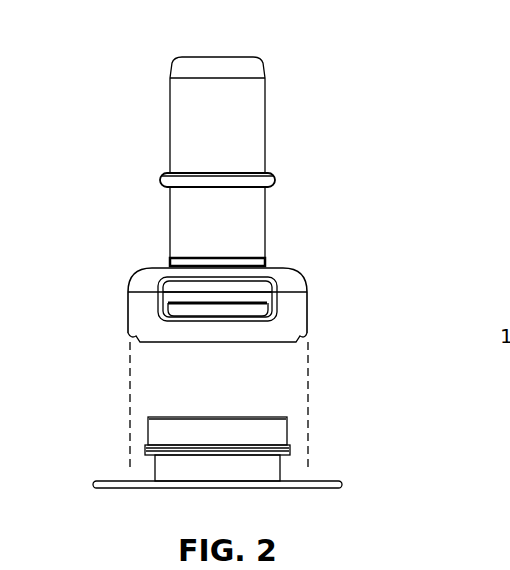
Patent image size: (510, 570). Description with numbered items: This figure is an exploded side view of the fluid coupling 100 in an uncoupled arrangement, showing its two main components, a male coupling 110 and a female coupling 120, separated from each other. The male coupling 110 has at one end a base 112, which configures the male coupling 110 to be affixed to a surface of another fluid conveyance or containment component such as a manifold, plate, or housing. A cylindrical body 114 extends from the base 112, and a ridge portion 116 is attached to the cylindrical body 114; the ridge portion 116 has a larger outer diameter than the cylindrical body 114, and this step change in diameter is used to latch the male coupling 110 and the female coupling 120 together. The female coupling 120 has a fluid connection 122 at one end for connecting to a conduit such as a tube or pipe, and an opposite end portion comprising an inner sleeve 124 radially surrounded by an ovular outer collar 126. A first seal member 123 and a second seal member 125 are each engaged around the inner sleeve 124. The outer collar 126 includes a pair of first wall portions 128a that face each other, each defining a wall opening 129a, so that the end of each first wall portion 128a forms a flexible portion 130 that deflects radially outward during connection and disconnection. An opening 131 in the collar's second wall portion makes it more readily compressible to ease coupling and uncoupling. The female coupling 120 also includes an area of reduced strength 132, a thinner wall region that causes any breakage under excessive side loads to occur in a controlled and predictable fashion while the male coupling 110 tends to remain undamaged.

The fluid coupling 100 is at (427, 158).
The male coupling 110 is at (203, 421).
The base 112 is at (333, 481).
The cylindrical body 114 is at (157, 468).
The ridge portion 116 is at (147, 450).
The female coupling 120 is at (246, 318).
The fluid connection 122 is at (170, 117).
The first seal member 123 is at (163, 313).
The inner sleeve 124 is at (275, 290).
The second seal member 125 is at (238, 292).
The ovular outer collar 126 is at (128, 292).
The first wall portions 128a is at (187, 343).
The wall opening 129a is at (290, 314).
The flexible portion 130 is at (220, 323).
The opening 131 is at (145, 270).
The area of reduced strength 132 is at (200, 258).